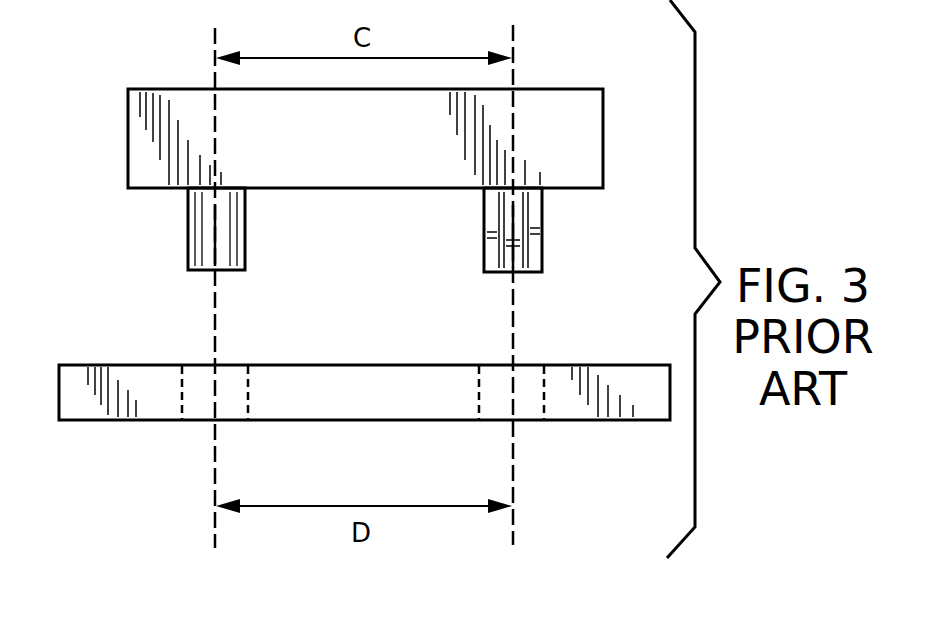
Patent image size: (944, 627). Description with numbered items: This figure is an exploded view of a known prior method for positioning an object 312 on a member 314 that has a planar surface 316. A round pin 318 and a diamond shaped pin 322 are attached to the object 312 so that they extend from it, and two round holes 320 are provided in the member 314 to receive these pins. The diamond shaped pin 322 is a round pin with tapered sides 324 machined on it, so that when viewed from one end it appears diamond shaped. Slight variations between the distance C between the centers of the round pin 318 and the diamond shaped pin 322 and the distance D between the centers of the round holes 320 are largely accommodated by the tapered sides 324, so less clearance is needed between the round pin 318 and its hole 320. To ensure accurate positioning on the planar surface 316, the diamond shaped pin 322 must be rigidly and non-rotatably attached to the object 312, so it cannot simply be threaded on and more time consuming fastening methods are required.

The object 312 is at (330, 155).
The member 314 is at (326, 407).
The planar surface 316 is at (353, 387).
The round pin 318 is at (193, 250).
The round holes 320 is at (181, 387).
The diamond shaped pin 322 is at (509, 270).
The tapered sides 324 is at (487, 248).